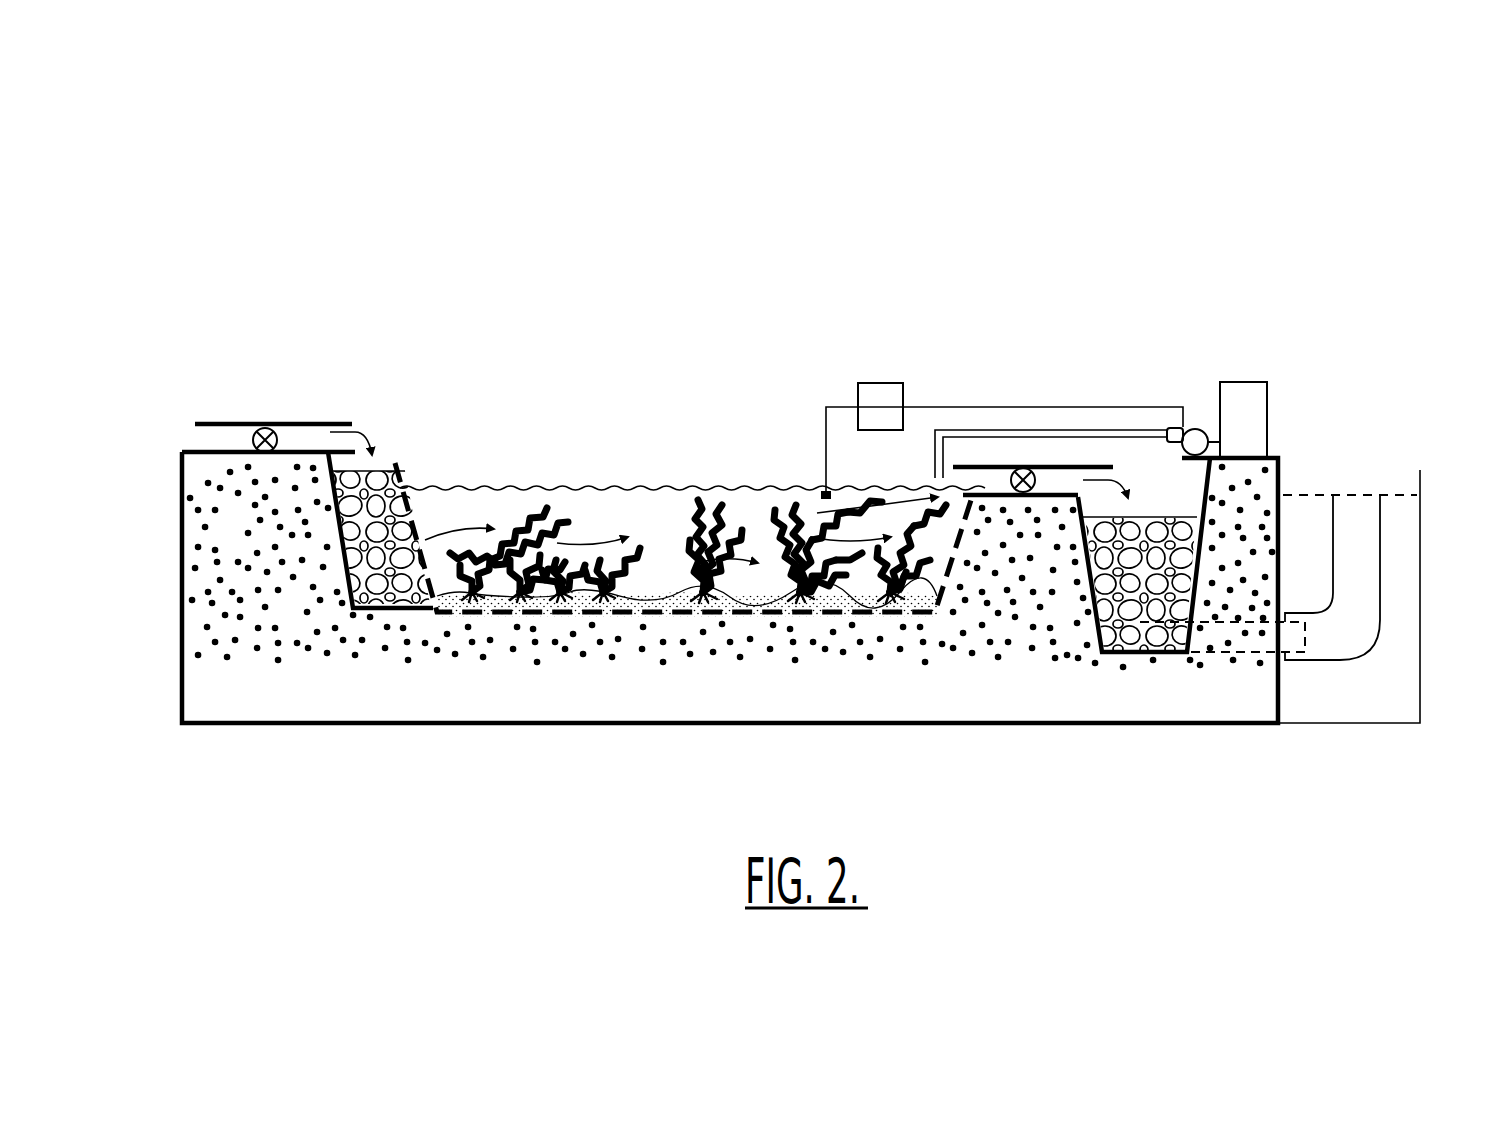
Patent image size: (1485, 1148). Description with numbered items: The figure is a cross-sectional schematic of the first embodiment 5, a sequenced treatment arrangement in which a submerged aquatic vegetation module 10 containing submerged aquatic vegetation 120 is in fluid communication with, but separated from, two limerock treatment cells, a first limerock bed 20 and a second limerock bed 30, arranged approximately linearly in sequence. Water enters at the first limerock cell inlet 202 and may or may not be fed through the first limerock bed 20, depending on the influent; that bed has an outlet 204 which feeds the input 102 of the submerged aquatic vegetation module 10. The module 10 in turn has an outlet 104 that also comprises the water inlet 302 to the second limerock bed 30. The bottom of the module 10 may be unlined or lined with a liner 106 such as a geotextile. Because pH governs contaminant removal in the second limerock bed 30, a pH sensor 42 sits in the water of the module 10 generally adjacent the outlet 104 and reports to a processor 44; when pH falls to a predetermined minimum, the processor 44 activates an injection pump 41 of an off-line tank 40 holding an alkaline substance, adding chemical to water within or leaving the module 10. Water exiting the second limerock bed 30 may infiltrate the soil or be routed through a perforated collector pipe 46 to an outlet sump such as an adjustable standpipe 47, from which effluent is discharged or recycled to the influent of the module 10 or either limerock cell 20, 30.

The first embodiment 5 is at (256, 193).
The submerged aquatic vegetation module 10 is at (610, 410).
The first limerock bed 20 is at (400, 483).
The second limerock bed 30 is at (1143, 643).
The off-line tank 40 is at (1245, 392).
The injection pump 41 is at (1203, 427).
The pH sensor 42 is at (817, 492).
The processor 44 is at (885, 384).
The perforated collector pipe 46 is at (1253, 643).
The adjustable standpipe 47 is at (1363, 593).
The input 102 is at (420, 560).
The outlet 104 is at (983, 478).
The liner 106 is at (575, 725).
The submerged aquatic vegetation 120 is at (720, 500).
The first limerock cell inlet 202 is at (360, 424).
The outlet 204 is at (417, 547).
The water inlet 302 is at (1077, 480).